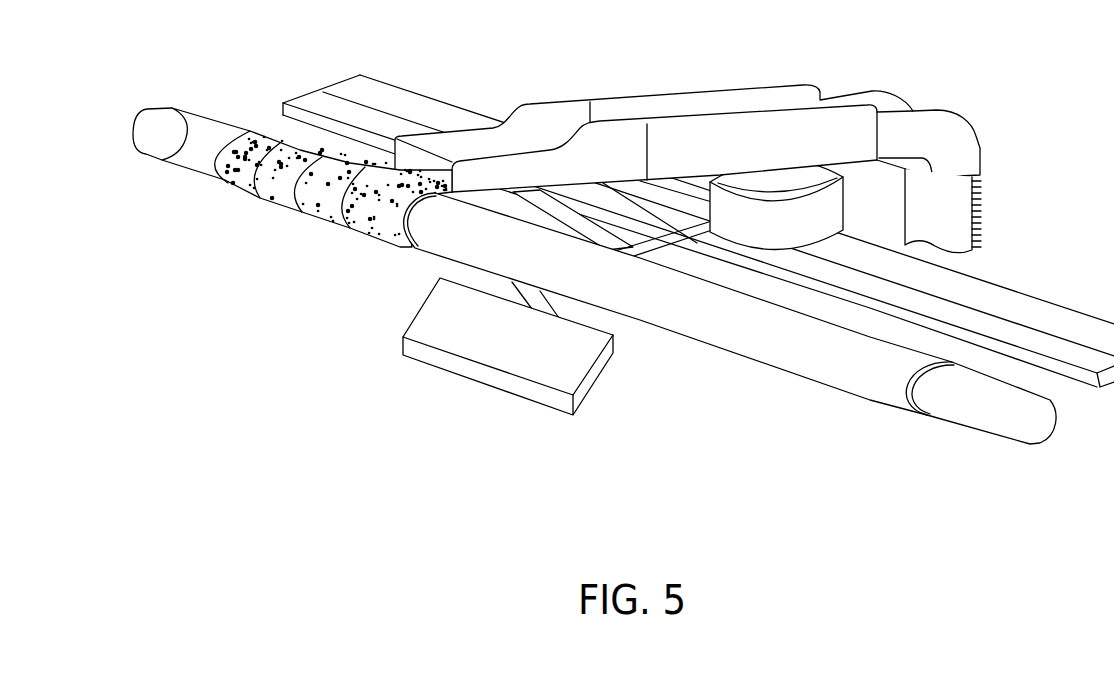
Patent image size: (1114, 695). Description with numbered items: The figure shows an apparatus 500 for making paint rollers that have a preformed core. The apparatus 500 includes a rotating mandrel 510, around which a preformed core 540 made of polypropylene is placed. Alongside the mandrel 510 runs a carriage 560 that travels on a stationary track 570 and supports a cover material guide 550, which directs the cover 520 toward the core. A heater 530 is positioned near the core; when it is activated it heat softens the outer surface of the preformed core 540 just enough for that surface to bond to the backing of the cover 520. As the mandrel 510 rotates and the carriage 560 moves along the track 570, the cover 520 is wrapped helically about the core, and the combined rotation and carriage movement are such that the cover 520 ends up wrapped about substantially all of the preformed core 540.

The apparatus 500 is at (688, 435).
The rotating mandrel 510 is at (150, 141).
The cover 520 is at (328, 212).
The heater 530 is at (503, 360).
The preformed core 540 is at (807, 366).
The cover material guide 550 is at (768, 84).
The carriage 560 is at (828, 215).
The stationary track 570 is at (1062, 319).